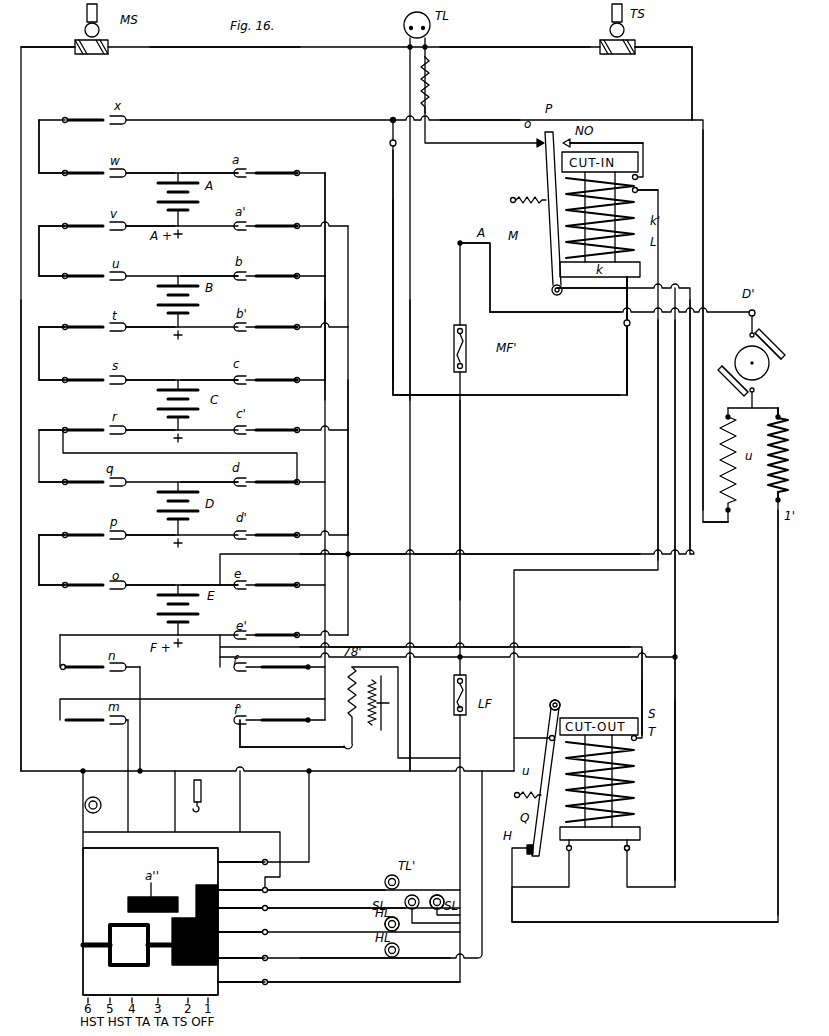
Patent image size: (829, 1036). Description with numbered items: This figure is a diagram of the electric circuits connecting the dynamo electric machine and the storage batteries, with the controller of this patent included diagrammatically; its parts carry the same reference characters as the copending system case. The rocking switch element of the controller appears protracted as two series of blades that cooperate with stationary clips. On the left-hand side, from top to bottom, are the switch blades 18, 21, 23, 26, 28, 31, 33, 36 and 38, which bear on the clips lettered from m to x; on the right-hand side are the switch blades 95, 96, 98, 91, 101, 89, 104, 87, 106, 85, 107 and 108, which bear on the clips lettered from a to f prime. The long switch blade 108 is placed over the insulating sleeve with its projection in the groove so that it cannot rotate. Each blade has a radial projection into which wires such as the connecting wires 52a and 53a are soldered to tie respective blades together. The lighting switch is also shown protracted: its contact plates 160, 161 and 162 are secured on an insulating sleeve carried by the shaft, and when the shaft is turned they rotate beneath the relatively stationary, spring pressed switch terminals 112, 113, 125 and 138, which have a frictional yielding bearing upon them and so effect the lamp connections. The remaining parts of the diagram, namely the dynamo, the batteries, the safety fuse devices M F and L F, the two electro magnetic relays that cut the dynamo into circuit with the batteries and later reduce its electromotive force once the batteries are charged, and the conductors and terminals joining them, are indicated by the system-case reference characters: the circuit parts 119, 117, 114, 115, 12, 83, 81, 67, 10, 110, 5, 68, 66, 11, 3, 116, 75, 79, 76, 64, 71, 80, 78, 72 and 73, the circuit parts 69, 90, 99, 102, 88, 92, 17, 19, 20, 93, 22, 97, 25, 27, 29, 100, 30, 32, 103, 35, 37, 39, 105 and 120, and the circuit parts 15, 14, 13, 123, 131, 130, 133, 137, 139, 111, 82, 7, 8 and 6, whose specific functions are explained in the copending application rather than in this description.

The main switch lead 119 is at (48, 35).
The main conductor 117 is at (225, 39).
The spring pressed switch terminal 112 is at (376, 491).
The spring pressed switch terminal 113 is at (415, 491).
The conductor 114 is at (496, 493).
The conductor 115 is at (706, 83).
The conductor 12 is at (467, 424).
The conductor 83 is at (606, 134).
The conductor 81 is at (676, 515).
The cut-in relay terminal 67 is at (651, 200).
The conductor 10 is at (604, 411).
The conductor 110 is at (426, 270).
The conductor 5 is at (485, 277).
The conductor 68 is at (510, 387).
The conductor 66 is at (646, 440).
The spring pressed switch terminal 125 is at (684, 425).
The conductor 11 is at (601, 637).
The conductor 3 is at (467, 500).
The conductor 116 is at (470, 546).
The conductor 75 is at (465, 640).
The conductor 79 is at (607, 767).
The conductor 76 is at (644, 707).
The cut-out relay pivot 64 is at (538, 696).
The conductor 71 is at (647, 712).
The conductor 80 is at (685, 790).
The cut-out contact 78 is at (641, 856).
The conductor 72 is at (556, 905).
The conductor 73 is at (689, 916).
The conductor 69 is at (379, 290).
The conductor 90 is at (390, 350).
The connecting wire 52a is at (375, 377).
The connecting wire 53a is at (409, 396).
The conductor 99 is at (311, 350).
The conductor 102 is at (322, 405).
The conductor 88 is at (357, 482).
The switch blade 96 is at (334, 224).
The conductor 92 is at (333, 328).
The conductor 17 is at (49, 146).
The switch blade 18 is at (71, 183).
The battery A negative lead 19 is at (150, 163).
The switch blade 91 is at (232, 238).
The switch blade 95 is at (276, 163).
The switch blade 21 is at (102, 240).
The battery A positive lead 20 is at (150, 217).
The terminal lead 93 is at (276, 216).
The conductor 22 is at (49, 251).
The switch blade 23 is at (71, 267).
The conductor 97 is at (209, 290).
The switch blade 98 is at (276, 266).
The switch blade 26 is at (71, 319).
The battery B positive lead 25 is at (150, 319).
The conductor 27 is at (50, 353).
The switch blade 28 is at (71, 371).
The battery C negative lead 29 is at (150, 371).
The conductor 100 is at (209, 394).
The switch blade 101 is at (276, 371).
The switch blade 31 is at (102, 445).
The battery C positive lead 30 is at (150, 421).
The switch blade 89 is at (276, 421).
The conductor 32 is at (71, 473).
The switch blade 33 is at (84, 473).
The switch blade 104 is at (276, 473).
The conductor 103 is at (227, 656).
The switch blade 36 is at (71, 526).
The battery D positive lead 35 is at (150, 526).
The switch blade 87 is at (276, 526).
The conductor 37 is at (50, 560).
The switch blade 38 is at (71, 581).
The battery E negative lead 39 is at (150, 578).
The conductor 105 is at (209, 604).
The switch blade 106 is at (276, 578).
The switch blade 85 is at (276, 628).
The return conductor 120 is at (30, 613).
The switch blade 107 is at (285, 661).
The long switch blade 108 is at (285, 711).
The conductor 15 is at (262, 733).
The conductor 14 is at (305, 748).
The conductor 13 is at (418, 714).
The contact plate 160 is at (90, 876).
The contact plate 161 is at (125, 938).
The contact plate 162 is at (110, 980).
The conductor 123 is at (241, 861).
The conductor 131 is at (326, 885).
The signal lamp 130 is at (431, 895).
The conductor 133 is at (336, 907).
The signal lamp 137 is at (372, 922).
The spring pressed switch terminal 138 is at (241, 948).
The conductor 139 is at (364, 970).
The conductor 111 is at (241, 973).
The cut-in relay bar 82 is at (592, 290).
The brush 7 is at (769, 346).
The brush 8 is at (735, 380).
The conductor 6 is at (782, 419).